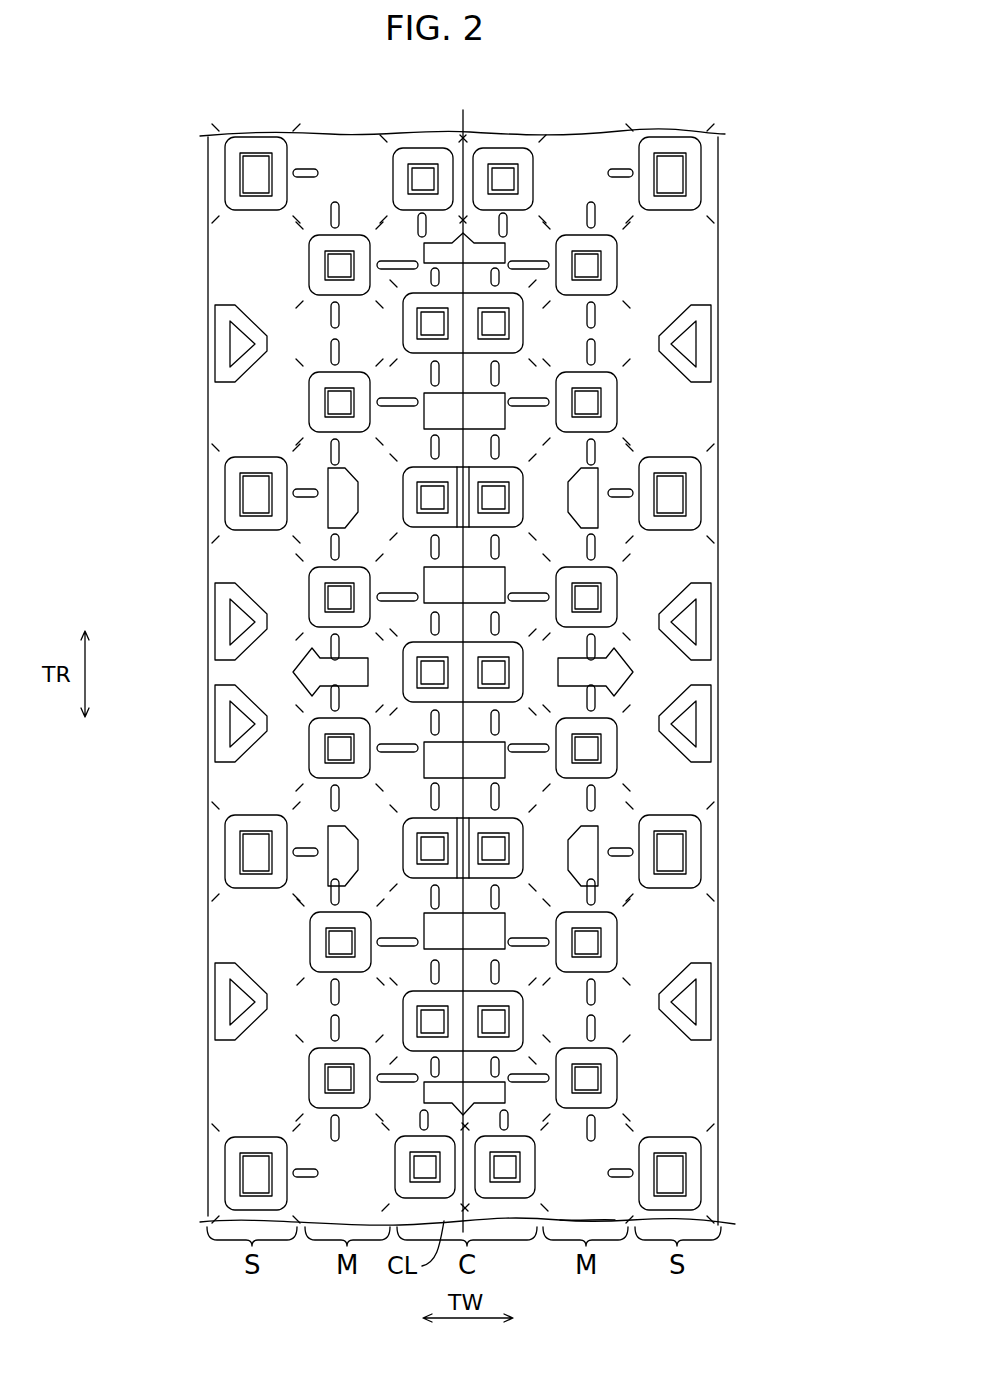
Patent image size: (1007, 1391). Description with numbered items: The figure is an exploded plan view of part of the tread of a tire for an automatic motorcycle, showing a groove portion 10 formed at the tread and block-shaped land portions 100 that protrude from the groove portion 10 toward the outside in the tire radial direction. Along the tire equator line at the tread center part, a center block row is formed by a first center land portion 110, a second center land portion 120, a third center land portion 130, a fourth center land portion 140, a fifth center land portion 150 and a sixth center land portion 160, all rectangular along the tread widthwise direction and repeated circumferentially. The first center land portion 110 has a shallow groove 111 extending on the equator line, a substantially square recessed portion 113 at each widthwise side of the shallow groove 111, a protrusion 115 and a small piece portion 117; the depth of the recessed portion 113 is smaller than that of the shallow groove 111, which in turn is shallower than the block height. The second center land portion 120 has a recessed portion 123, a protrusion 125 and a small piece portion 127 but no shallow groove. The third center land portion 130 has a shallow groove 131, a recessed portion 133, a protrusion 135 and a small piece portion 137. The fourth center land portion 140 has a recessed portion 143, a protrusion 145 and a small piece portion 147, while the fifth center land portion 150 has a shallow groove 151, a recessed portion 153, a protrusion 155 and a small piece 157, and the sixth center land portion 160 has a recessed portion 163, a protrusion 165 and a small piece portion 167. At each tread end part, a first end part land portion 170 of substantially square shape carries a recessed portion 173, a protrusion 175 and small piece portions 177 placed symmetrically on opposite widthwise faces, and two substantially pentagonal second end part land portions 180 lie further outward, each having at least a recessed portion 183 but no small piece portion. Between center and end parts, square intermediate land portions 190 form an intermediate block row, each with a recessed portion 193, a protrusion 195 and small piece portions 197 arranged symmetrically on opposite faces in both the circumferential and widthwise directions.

The land portion 100 is at (368, 121).
The groove portion 10 is at (690, 260).
The first center land portion 110 is at (501, 144).
The shallow groove 111 is at (466, 146).
The recessed portion 113 is at (418, 170).
The protrusion 115 is at (421, 184).
The small piece portion 117 is at (600, 1220).
The second center land portion 120 is at (665, 345).
The recessed portion 123 is at (593, 322).
The protrusion 125 is at (497, 322).
The small piece portion 127 is at (503, 272).
The third center land portion 130 is at (593, 496).
The shallow groove 131 is at (505, 405).
The recessed portion 133 is at (490, 486).
The protrusion 135 is at (505, 540).
The small piece portion 137 is at (497, 447).
The fourth center land portion 140 is at (593, 656).
The recessed portion 143 is at (492, 668).
The protrusion 145 is at (600, 672).
The small piece portion 147 is at (665, 705).
The fifth center land portion 150 is at (593, 839).
The shallow groove 151 is at (505, 750).
The recessed portion 153 is at (490, 838).
The protrusion 155 is at (505, 890).
The small piece 157 is at (497, 795).
The sixth center land portion 160 is at (593, 1011).
The recessed portion 163 is at (490, 1015).
The protrusion 165 is at (496, 1026).
The small piece portion 167 is at (497, 970).
The first end part land portion 170 is at (214, 666).
The recessed portion 173 is at (257, 515).
The protrusion 175 is at (250, 493).
The small piece portion 177 is at (306, 499).
The second end part land portion 180 is at (191, 672).
The recessed portion 183 is at (243, 622).
The intermediate land portion 190 is at (255, 708).
The recessed portion 193 is at (338, 395).
The protrusion 195 is at (331, 401).
The small piece portion 197 is at (397, 398).